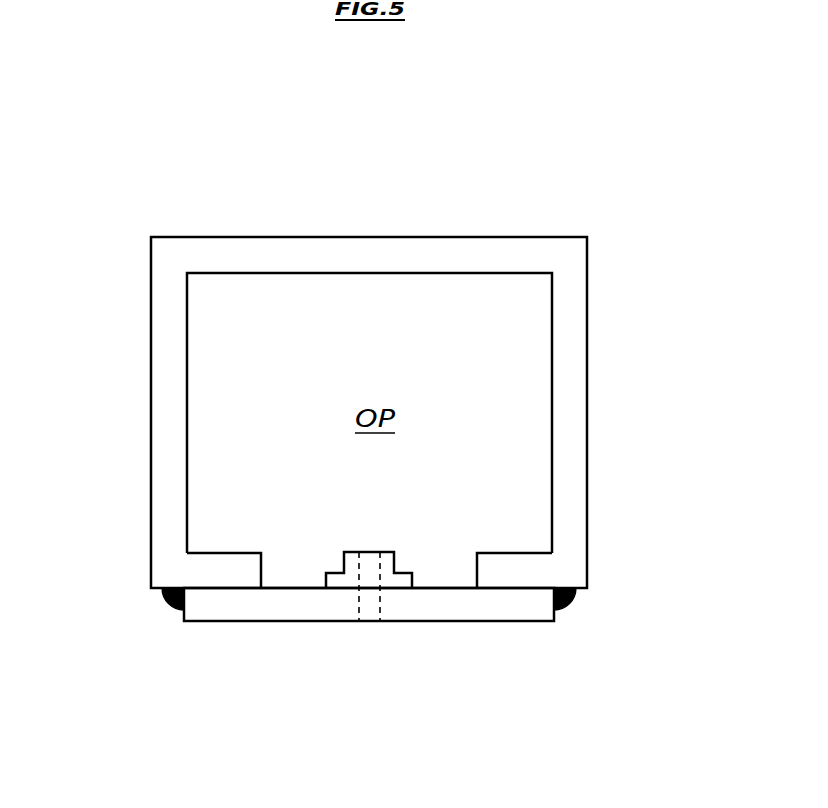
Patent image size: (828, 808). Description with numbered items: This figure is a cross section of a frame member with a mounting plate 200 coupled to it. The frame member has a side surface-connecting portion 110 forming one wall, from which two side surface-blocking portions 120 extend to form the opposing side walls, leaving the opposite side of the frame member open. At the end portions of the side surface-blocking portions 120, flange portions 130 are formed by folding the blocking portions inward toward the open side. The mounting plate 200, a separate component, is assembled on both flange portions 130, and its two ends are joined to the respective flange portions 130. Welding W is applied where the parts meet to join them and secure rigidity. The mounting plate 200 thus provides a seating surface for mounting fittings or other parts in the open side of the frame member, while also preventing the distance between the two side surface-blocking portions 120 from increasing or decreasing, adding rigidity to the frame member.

The side surface-connecting portion 110 is at (407, 253).
The side surface-blocking portion 120 is at (157, 420).
The flange portion 130 is at (232, 573).
The mounting plate 200 is at (303, 603).
The welding W is at (172, 598).